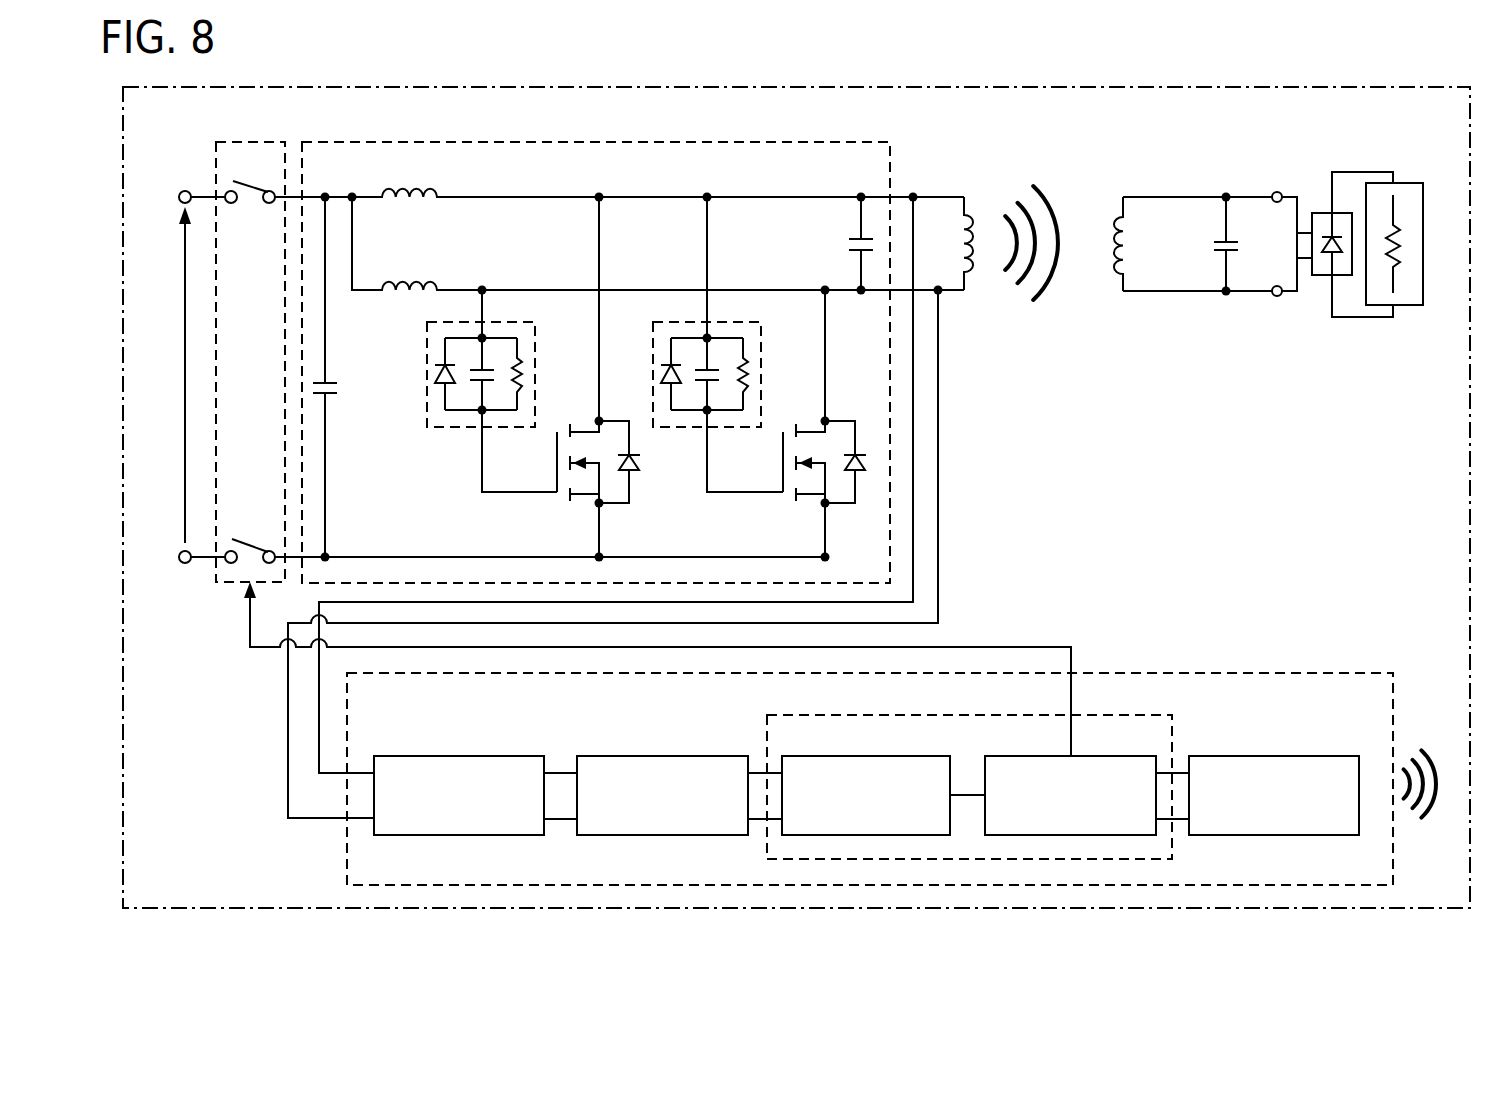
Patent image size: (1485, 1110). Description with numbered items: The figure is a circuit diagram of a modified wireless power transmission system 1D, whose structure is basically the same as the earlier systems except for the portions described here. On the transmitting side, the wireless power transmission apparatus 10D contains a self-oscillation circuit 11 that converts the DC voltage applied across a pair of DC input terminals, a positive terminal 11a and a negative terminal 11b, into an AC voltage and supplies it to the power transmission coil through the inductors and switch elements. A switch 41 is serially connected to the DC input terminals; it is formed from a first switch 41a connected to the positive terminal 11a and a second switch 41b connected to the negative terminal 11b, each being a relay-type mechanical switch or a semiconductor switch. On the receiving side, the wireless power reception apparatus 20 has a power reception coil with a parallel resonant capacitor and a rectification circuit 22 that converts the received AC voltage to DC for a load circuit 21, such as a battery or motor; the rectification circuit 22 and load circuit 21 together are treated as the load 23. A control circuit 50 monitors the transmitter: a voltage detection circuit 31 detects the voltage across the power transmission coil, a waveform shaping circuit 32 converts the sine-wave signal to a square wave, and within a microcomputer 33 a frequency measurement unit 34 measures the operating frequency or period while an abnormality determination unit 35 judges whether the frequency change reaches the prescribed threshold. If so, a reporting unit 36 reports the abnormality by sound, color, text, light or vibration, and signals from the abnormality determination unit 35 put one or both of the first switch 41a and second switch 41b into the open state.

The wireless power transmission system 1D is at (1410, 87).
The wireless power transmission apparatus 10D is at (948, 157).
The self-oscillation circuit 11 is at (840, 142).
The positive terminal 11a is at (185, 190).
The negative terminal 11b is at (185, 564).
The switch 41 is at (245, 142).
The first switch 41a is at (248, 208).
The second switch 41b is at (250, 530).
The wireless power reception apparatus 20 is at (1140, 170).
The load circuit 21 is at (1410, 183).
The rectification circuit 22 is at (1320, 212).
The load 23 is at (1423, 138).
The control circuit 50 is at (1338, 672).
The voltage detection circuit 31 is at (493, 756).
The waveform shaping circuit 32 is at (697, 757).
The microcomputer 33 is at (1125, 715).
The frequency measurement unit 34 is at (903, 757).
The abnormality determination unit 35 is at (1103, 756).
The reporting unit 36 is at (1308, 756).